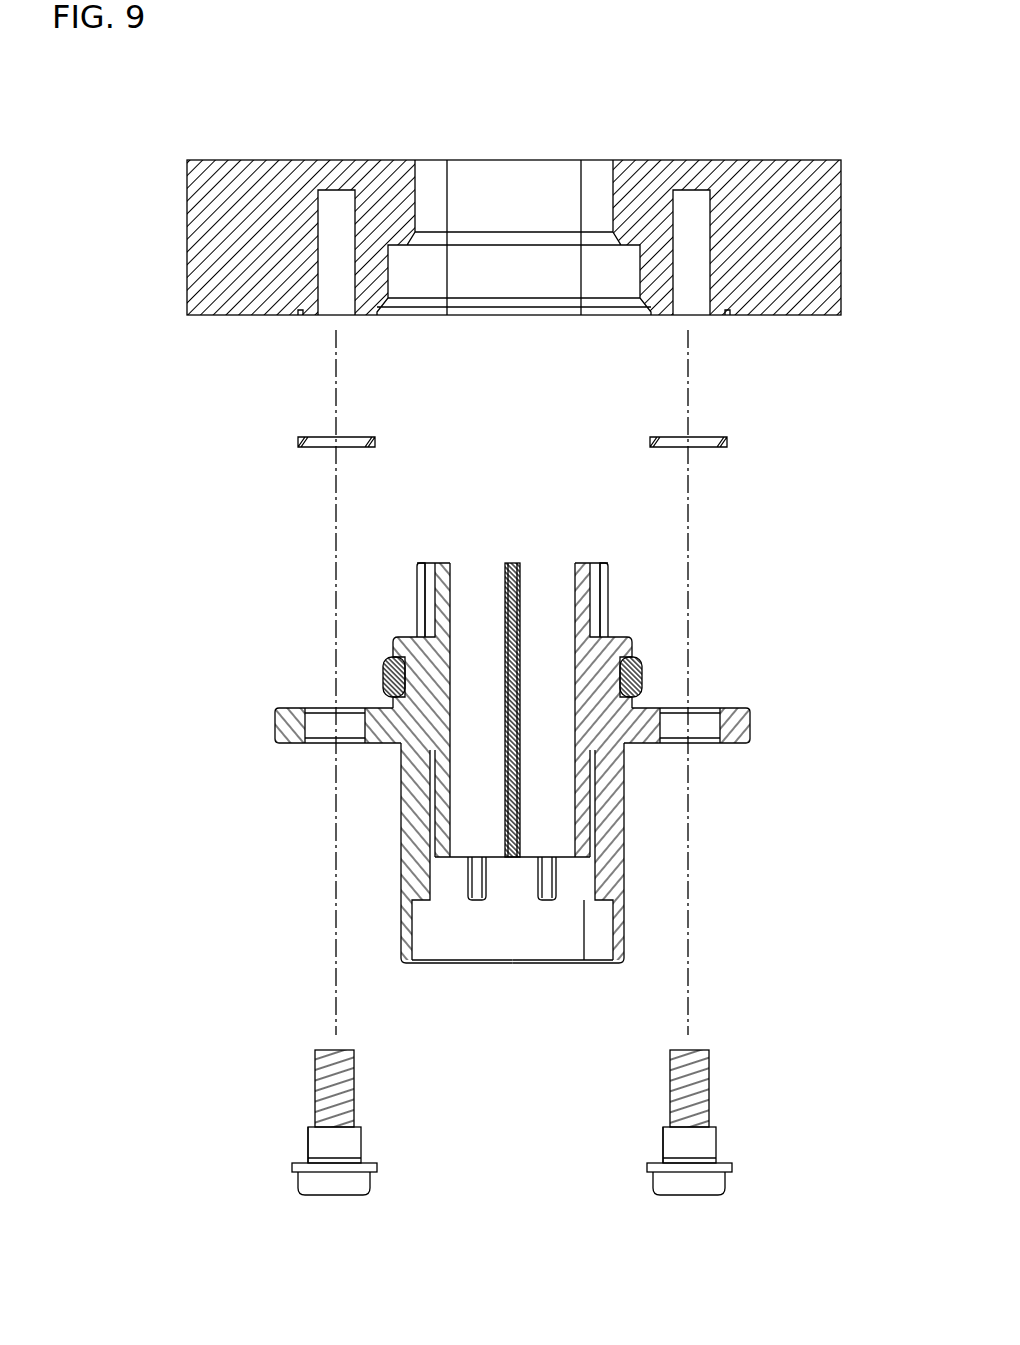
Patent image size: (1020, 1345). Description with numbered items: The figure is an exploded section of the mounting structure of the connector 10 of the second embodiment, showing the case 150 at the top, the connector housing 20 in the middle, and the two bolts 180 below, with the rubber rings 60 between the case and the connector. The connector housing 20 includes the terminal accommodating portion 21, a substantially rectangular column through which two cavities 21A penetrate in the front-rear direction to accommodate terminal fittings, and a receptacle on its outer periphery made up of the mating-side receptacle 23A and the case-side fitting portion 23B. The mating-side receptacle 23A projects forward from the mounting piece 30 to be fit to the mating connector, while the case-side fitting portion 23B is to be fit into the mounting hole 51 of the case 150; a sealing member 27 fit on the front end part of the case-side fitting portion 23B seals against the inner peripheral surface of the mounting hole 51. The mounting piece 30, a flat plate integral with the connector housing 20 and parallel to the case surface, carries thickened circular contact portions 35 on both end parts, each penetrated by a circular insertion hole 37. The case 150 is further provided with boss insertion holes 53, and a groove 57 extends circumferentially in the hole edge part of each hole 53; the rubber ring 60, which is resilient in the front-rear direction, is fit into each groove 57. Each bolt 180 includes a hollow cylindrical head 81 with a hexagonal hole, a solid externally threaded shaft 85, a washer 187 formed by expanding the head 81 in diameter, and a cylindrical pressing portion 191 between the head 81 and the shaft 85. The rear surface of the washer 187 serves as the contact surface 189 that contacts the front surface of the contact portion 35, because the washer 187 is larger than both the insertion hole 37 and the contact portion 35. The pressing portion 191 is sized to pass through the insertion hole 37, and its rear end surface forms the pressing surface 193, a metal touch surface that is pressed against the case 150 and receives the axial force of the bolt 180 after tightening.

The connector 10 is at (800, 866).
The connector housing 20 is at (620, 637).
The terminal accommodating portion 21 is at (598, 826).
The cavities 21A is at (452, 597).
The mating-side receptacle 23A is at (401, 854).
The case-side fitting portion 23B is at (386, 637).
The sealing member 27 is at (380, 672).
The mounting piece 30 is at (738, 745).
The contact portions 35 is at (283, 708).
The insertion hole 37 is at (322, 742).
The mounting hole 51 is at (415, 207).
The boss insertion holes 53 is at (318, 214).
The grooves 57 is at (300, 316).
The rubber ring 60 is at (298, 441).
The head 81 is at (328, 1198).
The shaft 85 is at (354, 1073).
The case 150 is at (760, 160).
The bolt 180 is at (514, 1138).
The washer 187 is at (378, 1169).
The contact surface 189 is at (368, 1158).
The pressing portion 191 is at (307, 1146).
The pressing surface 193 is at (354, 1125).